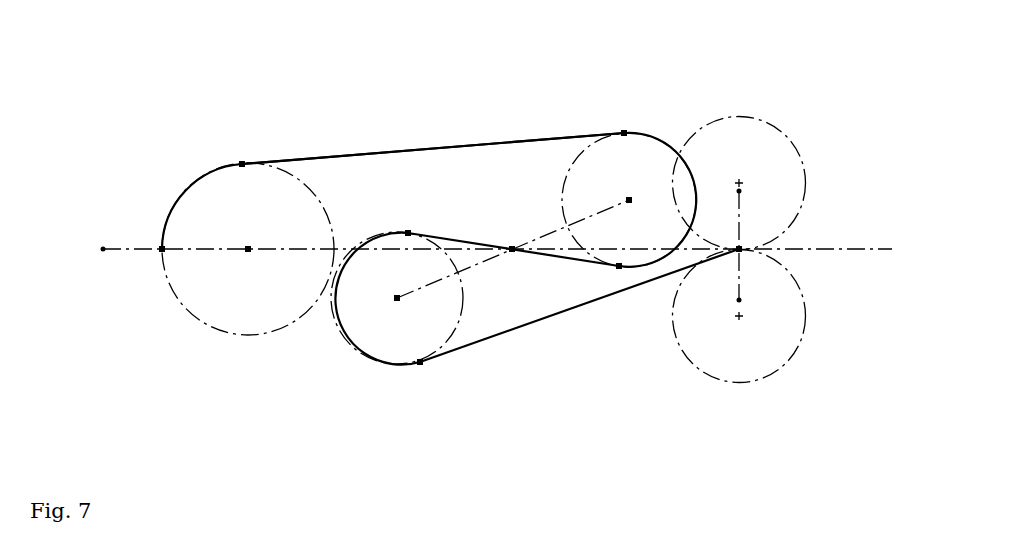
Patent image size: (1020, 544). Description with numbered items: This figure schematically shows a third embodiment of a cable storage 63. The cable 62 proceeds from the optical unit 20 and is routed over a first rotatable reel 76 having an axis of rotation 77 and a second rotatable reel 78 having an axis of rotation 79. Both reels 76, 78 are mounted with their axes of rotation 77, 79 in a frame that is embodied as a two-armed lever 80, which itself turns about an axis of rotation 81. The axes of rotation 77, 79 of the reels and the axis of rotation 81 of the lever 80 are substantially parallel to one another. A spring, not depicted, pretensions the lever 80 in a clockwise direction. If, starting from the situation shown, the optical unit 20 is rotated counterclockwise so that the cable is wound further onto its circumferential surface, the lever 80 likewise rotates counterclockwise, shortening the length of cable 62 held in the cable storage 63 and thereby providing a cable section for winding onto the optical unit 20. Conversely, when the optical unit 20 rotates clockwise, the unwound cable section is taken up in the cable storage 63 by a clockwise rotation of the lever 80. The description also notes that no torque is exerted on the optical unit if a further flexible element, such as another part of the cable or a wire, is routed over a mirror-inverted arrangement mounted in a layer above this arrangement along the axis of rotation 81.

The optical unit 20 is at (200, 297).
The cable 62 is at (398, 152).
The cable storage 63 is at (432, 103).
The first rotatable reel 76 is at (603, 168).
The axis of rotation 77 is at (629, 201).
The second rotatable reel 78 is at (374, 332).
The axis of rotation 79 is at (397, 298).
The two-armed lever 80 is at (542, 237).
The axis of rotation 81 is at (512, 249).